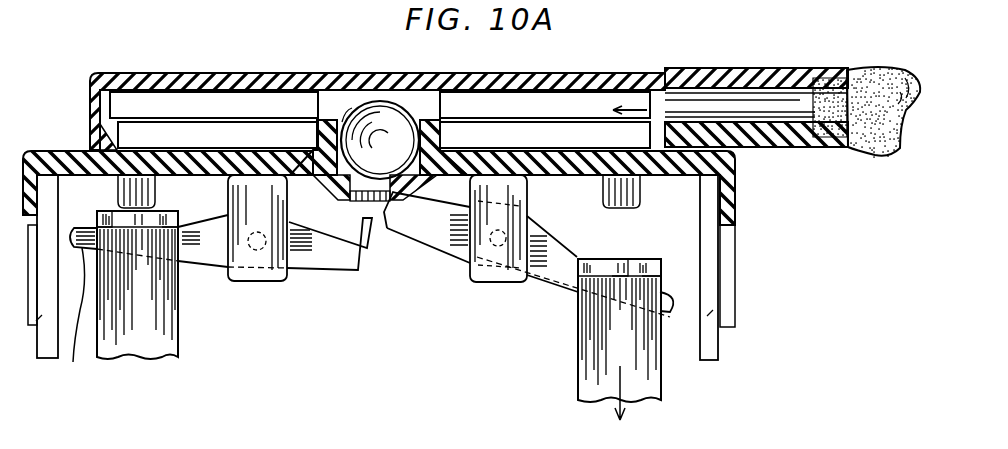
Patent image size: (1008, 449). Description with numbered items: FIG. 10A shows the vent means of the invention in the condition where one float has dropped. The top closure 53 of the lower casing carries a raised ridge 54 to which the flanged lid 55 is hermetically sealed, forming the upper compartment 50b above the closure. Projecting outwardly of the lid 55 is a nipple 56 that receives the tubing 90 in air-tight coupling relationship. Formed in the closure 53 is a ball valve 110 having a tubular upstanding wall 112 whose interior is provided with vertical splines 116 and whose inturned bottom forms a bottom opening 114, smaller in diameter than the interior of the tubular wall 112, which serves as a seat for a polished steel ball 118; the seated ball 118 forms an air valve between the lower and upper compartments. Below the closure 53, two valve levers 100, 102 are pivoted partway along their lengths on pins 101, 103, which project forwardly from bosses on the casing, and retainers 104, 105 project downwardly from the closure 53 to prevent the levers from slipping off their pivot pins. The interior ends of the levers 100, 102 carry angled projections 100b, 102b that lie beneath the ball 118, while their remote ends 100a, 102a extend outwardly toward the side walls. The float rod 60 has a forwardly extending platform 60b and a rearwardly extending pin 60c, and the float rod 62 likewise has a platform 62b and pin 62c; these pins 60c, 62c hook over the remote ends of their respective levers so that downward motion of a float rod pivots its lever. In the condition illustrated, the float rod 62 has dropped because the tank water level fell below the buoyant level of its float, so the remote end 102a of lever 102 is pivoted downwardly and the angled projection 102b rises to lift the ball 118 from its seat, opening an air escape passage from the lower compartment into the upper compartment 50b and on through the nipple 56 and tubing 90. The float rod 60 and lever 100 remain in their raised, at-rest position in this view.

The flanged lid 55 is at (177, 73).
The nipple 56 is at (720, 74).
The raised ridge 54 is at (97, 139).
The upper compartment 50b is at (230, 120).
The vertical splines 116 is at (410, 106).
The polished steel ball 118 is at (362, 118).
The ball valve 110 is at (453, 111).
The tubular upstanding wall 112 is at (453, 137).
The retainer 105 is at (518, 190).
The top closure 53 is at (736, 182).
The tubing 90 is at (896, 150).
The rearwardly extending pin 60c is at (90, 217).
The forwardly extending platform 60b is at (183, 208).
The bottom opening 114 is at (360, 204).
The angled projection 102b is at (383, 212).
The valve lever 100 is at (204, 264).
The retainer 104 is at (258, 270).
The pivot pin 101 is at (258, 252).
The remote end 100a is at (76, 352).
The float rod 60 is at (150, 343).
The angled projection 100b is at (372, 252).
The pivot pin 103 is at (498, 247).
The valve lever 102 is at (552, 285).
The rearwardly extending pin 62c is at (618, 259).
The forwardly extending platform 62b is at (652, 259).
The remote end 102a is at (664, 300).
The float rod 62 is at (645, 392).